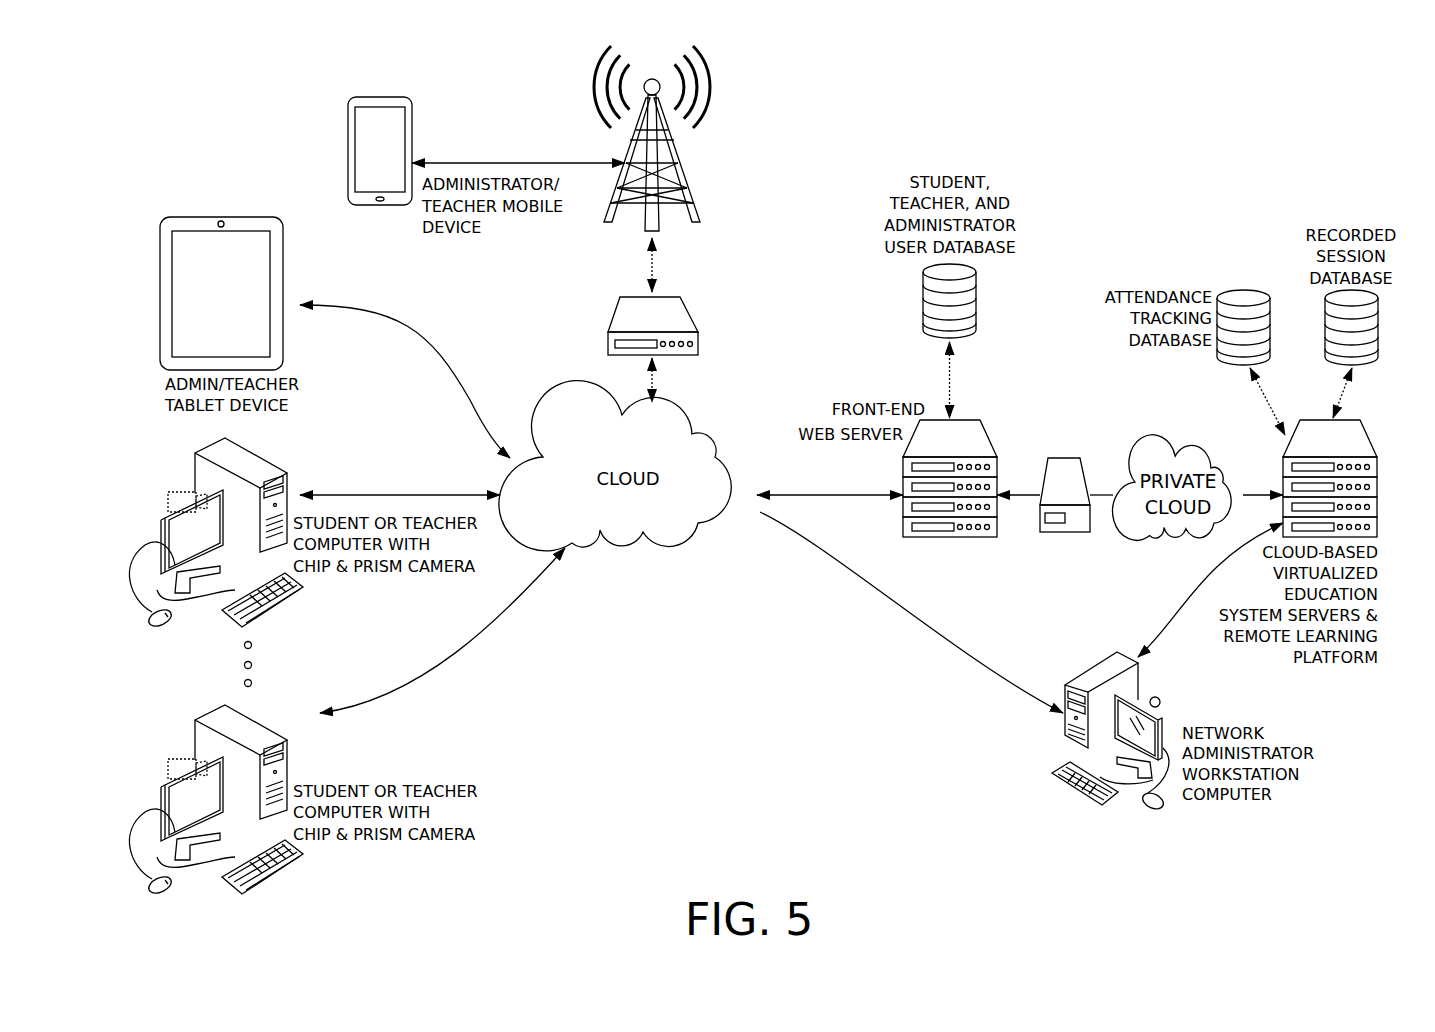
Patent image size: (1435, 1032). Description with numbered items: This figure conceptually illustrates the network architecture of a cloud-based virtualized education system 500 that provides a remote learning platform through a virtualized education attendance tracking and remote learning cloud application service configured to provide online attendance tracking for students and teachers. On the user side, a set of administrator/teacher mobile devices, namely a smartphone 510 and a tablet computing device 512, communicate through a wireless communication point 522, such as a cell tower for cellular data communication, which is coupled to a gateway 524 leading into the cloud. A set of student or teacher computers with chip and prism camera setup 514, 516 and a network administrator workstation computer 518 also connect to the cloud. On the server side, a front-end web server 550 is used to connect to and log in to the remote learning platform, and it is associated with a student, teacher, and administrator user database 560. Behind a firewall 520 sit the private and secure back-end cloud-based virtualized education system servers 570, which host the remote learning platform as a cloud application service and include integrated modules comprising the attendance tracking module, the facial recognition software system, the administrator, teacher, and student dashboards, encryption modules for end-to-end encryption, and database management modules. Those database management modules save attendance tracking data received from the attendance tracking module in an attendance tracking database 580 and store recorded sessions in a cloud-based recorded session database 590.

The cloud-based virtualized education system 500 is at (1215, 66).
The smartphone 510 is at (413, 133).
The tablet computing device 512 is at (163, 218).
The student or teacher computer with chip & prism camera setup 514 is at (195, 465).
The student or teacher computer with chip & prism camera setup 516 is at (195, 732).
The network administrator workstation computer 518 is at (1085, 678).
The firewall 520 is at (1087, 445).
The wireless communication point 522 is at (692, 193).
The gateway 524 is at (637, 327).
The front-end web server 550 is at (934, 450).
The student, teacher, and administrator user database 560 is at (922, 330).
The cloud-based virtualized education system servers 570 is at (1314, 450).
The attendance tracking database 580 is at (1215, 360).
The recorded session database 590 is at (1325, 362).